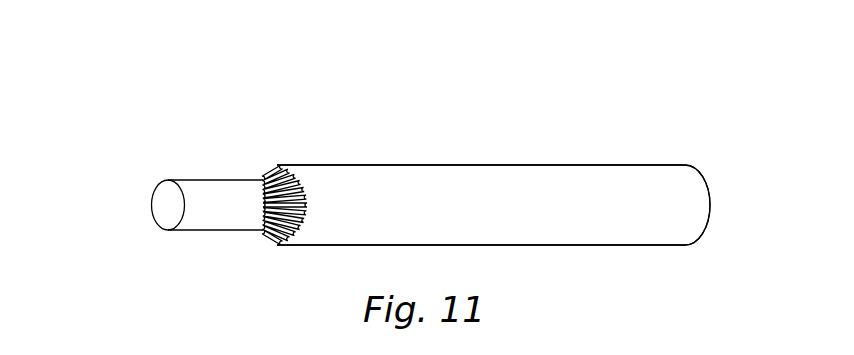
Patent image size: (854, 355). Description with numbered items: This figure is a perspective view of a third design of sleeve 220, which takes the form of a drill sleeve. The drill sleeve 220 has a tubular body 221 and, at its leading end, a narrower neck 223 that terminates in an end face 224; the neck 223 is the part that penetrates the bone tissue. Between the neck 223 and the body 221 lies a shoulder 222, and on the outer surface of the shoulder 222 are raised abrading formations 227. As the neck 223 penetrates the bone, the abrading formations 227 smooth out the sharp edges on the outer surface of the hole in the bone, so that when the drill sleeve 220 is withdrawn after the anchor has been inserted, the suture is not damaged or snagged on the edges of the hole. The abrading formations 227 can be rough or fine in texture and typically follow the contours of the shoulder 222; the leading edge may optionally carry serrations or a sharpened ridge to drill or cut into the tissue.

The sleeve 220 is at (418, 121).
The outer tube 221 is at (505, 165).
The shoulder 222 is at (267, 167).
The neck 223 is at (202, 180).
The rod end face 224 is at (147, 190).
The abrading formations 227 is at (272, 238).